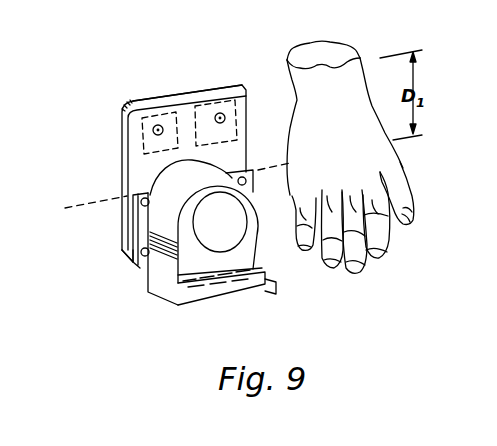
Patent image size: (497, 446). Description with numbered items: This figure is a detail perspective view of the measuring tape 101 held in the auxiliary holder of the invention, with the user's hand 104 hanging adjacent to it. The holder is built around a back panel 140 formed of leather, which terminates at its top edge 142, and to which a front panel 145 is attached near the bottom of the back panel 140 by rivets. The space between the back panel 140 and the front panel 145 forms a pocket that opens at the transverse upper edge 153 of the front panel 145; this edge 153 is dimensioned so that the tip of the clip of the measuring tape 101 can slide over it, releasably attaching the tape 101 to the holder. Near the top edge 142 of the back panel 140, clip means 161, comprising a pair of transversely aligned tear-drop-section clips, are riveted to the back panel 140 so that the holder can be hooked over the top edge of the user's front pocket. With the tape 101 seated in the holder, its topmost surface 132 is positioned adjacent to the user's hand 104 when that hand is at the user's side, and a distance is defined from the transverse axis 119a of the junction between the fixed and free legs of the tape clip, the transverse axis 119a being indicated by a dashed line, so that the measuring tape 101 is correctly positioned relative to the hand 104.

The measuring tape 101 is at (225, 297).
The hand 104 is at (363, 107).
The transverse axis 119a is at (87, 210).
The topmost surface 132 is at (173, 182).
The back panel 140 is at (133, 102).
The top edge 142 is at (172, 93).
The front panel 145 is at (127, 238).
The transverse upper edge 153 is at (146, 186).
The clip means 161 is at (248, 92).